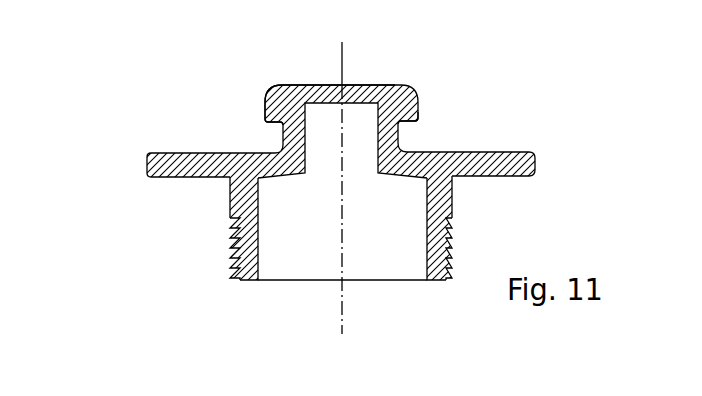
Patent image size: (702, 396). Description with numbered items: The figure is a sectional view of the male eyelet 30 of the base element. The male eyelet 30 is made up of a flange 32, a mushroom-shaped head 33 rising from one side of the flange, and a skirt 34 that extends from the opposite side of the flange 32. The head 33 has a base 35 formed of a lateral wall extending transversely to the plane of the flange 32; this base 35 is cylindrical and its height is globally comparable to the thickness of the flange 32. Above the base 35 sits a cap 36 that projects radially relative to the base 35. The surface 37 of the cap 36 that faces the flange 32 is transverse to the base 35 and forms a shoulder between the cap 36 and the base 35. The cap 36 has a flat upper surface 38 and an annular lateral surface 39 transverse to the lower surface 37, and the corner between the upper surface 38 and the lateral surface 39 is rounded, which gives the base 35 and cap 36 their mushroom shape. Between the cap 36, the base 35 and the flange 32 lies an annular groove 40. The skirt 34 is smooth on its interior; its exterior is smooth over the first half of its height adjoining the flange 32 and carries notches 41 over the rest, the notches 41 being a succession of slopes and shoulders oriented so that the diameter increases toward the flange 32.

The male eyelet 30 is at (97, 167).
The flange 32 is at (495, 152).
The mushroom-shaped head 33 is at (353, 56).
The skirt 34 is at (183, 230).
The base 35 is at (378, 175).
The cap 36 is at (388, 85).
The surface 37 is at (266, 124).
The flat upper surface 38 is at (306, 85).
The annular lateral surface 39 is at (265, 110).
The annular groove 40 is at (405, 139).
The notches 41 is at (451, 247).